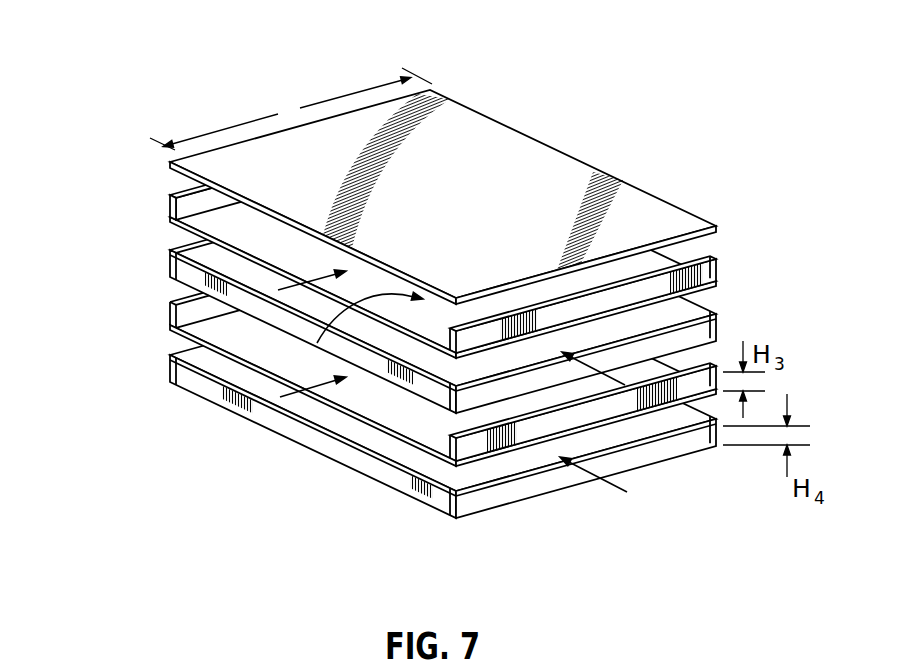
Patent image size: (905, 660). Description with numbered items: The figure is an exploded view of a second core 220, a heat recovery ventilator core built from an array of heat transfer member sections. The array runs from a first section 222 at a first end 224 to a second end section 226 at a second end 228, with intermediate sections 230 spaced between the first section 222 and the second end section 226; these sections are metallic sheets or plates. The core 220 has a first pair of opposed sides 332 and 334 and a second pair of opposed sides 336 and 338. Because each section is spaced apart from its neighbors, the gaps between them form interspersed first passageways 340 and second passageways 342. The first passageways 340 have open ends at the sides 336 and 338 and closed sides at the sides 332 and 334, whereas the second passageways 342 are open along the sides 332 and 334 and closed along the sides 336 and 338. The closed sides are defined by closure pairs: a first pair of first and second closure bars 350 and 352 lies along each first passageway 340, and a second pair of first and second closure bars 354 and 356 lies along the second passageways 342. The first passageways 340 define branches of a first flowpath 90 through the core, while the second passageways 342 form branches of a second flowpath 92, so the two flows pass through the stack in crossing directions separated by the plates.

The second core 220 is at (86, 82).
The first section 222 is at (373, 478).
The first end 224 is at (495, 527).
The second end section 226 is at (443, 179).
The second end 228 is at (486, 155).
The intermediate sections 230 is at (172, 225).
The first side 332 is at (226, 104).
The first side 334 is at (604, 515).
The second side 336 is at (357, 395).
The second side 338 is at (580, 128).
The first passageways 340 is at (320, 344).
The second passageways 342 is at (608, 333).
The first closure bar 350 is at (170, 203).
The second closure bar 352 is at (713, 271).
The first closure bar 354 is at (441, 389).
The second closure bar 356 is at (717, 329).
The first flowpath 90 is at (284, 411).
The second flowpath 92 is at (590, 468).